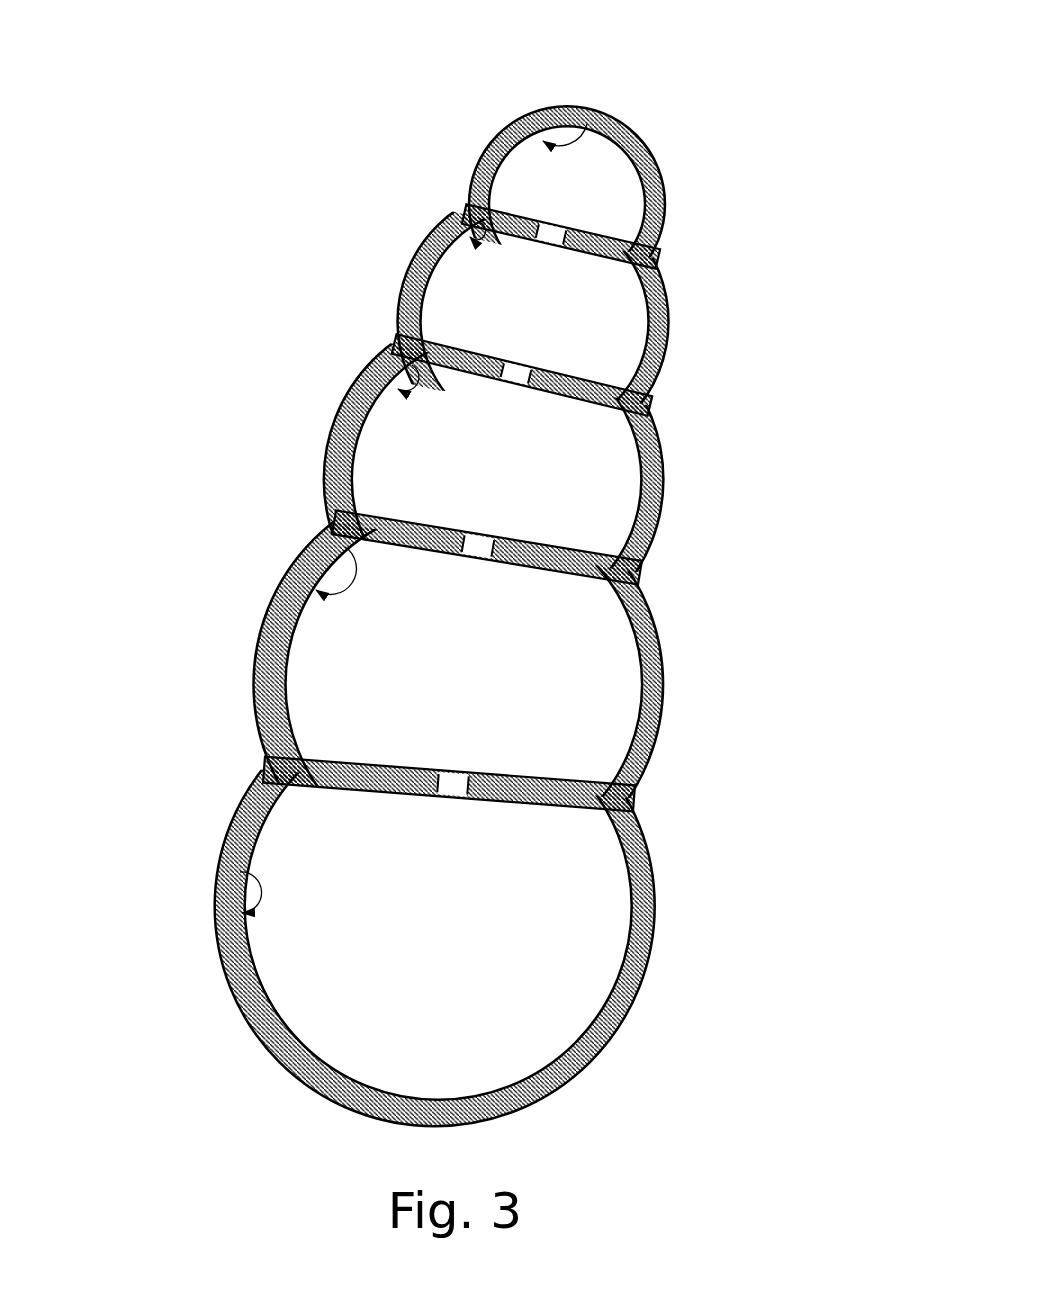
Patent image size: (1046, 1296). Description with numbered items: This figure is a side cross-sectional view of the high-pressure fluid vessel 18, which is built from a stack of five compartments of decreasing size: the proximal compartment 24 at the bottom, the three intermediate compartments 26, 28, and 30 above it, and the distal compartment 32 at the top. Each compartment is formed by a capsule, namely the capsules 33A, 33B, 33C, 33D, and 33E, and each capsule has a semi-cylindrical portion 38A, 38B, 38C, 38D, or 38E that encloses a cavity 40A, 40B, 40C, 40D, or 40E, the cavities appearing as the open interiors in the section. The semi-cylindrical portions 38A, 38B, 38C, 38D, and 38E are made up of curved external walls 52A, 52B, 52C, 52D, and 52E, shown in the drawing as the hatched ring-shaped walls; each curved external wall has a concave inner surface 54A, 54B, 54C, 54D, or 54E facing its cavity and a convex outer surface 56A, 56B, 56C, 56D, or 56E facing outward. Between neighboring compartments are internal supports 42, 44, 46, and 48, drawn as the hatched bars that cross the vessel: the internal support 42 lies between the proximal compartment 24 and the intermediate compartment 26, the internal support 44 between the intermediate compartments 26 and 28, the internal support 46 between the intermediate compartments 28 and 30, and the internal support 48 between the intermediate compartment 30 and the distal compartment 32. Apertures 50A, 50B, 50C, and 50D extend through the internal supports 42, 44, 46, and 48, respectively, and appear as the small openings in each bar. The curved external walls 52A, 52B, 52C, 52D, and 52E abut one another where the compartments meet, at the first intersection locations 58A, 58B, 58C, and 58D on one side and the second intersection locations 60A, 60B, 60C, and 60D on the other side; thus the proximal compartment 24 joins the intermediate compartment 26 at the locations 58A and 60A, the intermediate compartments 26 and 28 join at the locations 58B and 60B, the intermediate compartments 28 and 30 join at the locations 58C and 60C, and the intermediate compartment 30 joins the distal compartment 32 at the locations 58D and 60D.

The high-pressure fluid vessel 18 is at (160, 84).
The proximal compartment 24 is at (433, 906).
The intermediate compartment 26 is at (462, 685).
The intermediate compartment 28 is at (498, 469).
The intermediate compartment 30 is at (518, 295).
The distal compartment 32 is at (595, 159).
The capsule 33A is at (420, 906).
The capsule 33B is at (462, 685).
The capsule 33C is at (492, 480).
The capsule 33D is at (517, 295).
The capsule 33E is at (586, 159).
The semi-cylindrical portion 38A is at (420, 906).
The semi-cylindrical portion 38B is at (447, 685).
The semi-cylindrical portion 38C is at (484, 480).
The semi-cylindrical portion 38D is at (511, 295).
The semi-cylindrical portion 38E is at (560, 159).
The cavity 40A is at (432, 924).
The cavity 40B is at (460, 669).
The cavity 40C is at (489, 456).
The cavity 40D is at (530, 314).
The cavity 40E is at (561, 169).
The internal support 42 is at (372, 708).
The internal support 44 is at (425, 477).
The internal support 46 is at (465, 299).
The internal support 48 is at (517, 160).
The aperture 50A is at (455, 778).
The aperture 50B is at (478, 545).
The aperture 50C is at (512, 372).
The aperture 50D is at (547, 232).
The curved external wall 52A is at (358, 906).
The curved external wall 52B is at (386, 685).
The curved external wall 52C is at (419, 480).
The curved external wall 52D is at (450, 295).
The curved external wall 52E is at (519, 159).
The concave inner surface 54A is at (240, 872).
The concave inner surface 54B is at (345, 547).
The concave inner surface 54C is at (412, 365).
The concave inner surface 54D is at (478, 222).
The concave inner surface 54E is at (587, 124).
The convex outer surface 56A is at (212, 925).
The convex outer surface 56B is at (256, 690).
The convex outer surface 56C is at (345, 386).
The convex outer surface 56D is at (410, 253).
The convex outer surface 56E is at (468, 198).
The first intersection location 58A is at (632, 797).
The first intersection location 58B is at (640, 573).
The first intersection location 58C is at (648, 402).
The first intersection location 58D is at (657, 255).
The second intersection location 60A is at (268, 758).
The second intersection location 60B is at (326, 525).
The second intersection location 60C is at (396, 338).
The second intersection location 60D is at (462, 202).